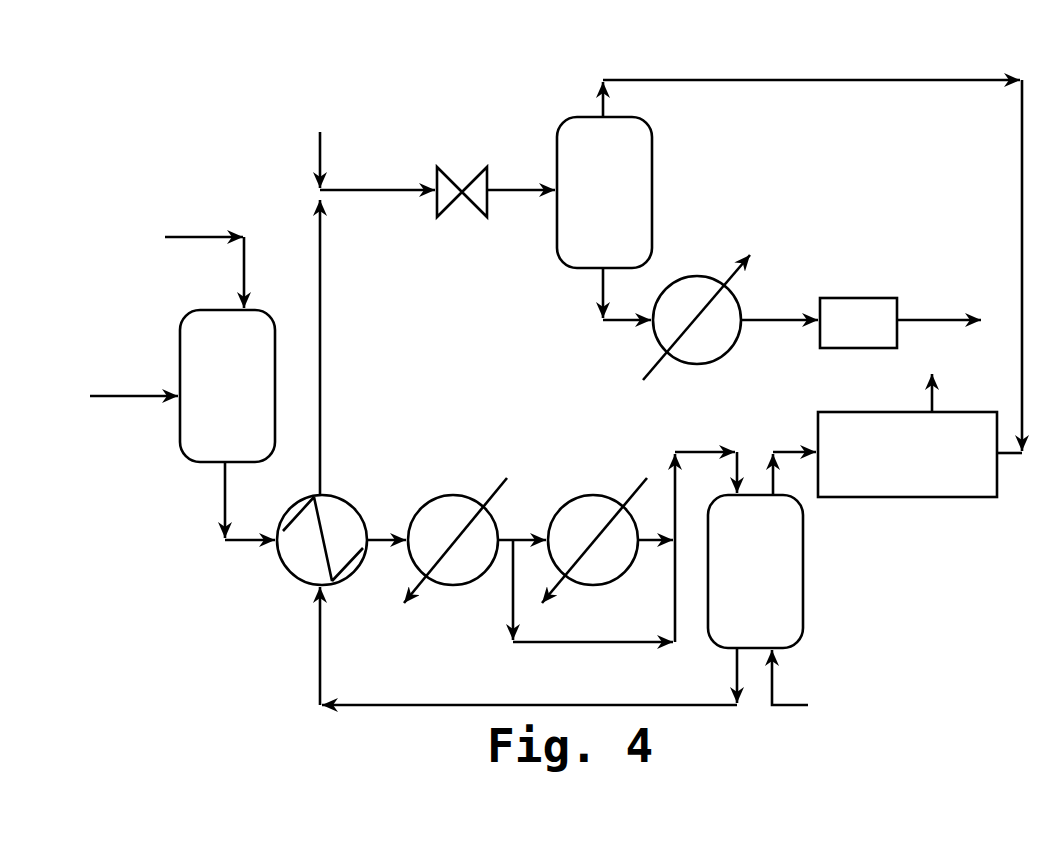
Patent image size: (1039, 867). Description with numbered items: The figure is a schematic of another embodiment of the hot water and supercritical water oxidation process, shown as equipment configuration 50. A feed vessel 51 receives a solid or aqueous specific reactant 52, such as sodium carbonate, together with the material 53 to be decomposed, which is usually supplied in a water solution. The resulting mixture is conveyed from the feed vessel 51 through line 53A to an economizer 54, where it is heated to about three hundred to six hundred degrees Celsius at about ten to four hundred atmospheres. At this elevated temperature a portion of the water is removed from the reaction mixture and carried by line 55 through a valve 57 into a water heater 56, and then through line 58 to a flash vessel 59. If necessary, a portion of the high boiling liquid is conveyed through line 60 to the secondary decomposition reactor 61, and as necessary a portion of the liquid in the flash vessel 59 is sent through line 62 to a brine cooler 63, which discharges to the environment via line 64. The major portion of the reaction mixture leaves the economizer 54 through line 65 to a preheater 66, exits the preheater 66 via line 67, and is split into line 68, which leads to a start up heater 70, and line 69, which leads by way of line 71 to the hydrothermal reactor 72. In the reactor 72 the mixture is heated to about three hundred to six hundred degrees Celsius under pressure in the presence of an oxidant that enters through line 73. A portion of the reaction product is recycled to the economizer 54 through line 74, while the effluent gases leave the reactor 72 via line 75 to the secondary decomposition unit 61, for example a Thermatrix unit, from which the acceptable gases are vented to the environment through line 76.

The equipment configuration 50 is at (253, 619).
The feed vessel 51 is at (184, 326).
The specific reactant 52 is at (243, 278).
The material to be decomposed 53 is at (120, 395).
The line 53A is at (250, 546).
The economizer 54 is at (335, 497).
The line 55 is at (323, 320).
The water heater 56 is at (566, 119).
The valve 57 is at (470, 176).
The line 58 is at (600, 294).
The flash vessel 59 is at (660, 340).
The line 60 is at (755, 80).
The secondary decomposition reactor 61 is at (920, 497).
The line 62 is at (781, 323).
The brine cooler 63 is at (848, 298).
The line 64 is at (956, 323).
The line 65 is at (404, 530).
The preheater 66 is at (462, 495).
The line 67 is at (503, 570).
The line 68 is at (527, 530).
The line 69 is at (600, 645).
The start up heater 70 is at (595, 495).
The line 71 is at (705, 448).
The hydrothermal reactor 72 is at (804, 596).
The line 73 is at (775, 692).
The line 74 is at (608, 698).
The line 75 is at (790, 449).
The line 76 is at (926, 401).